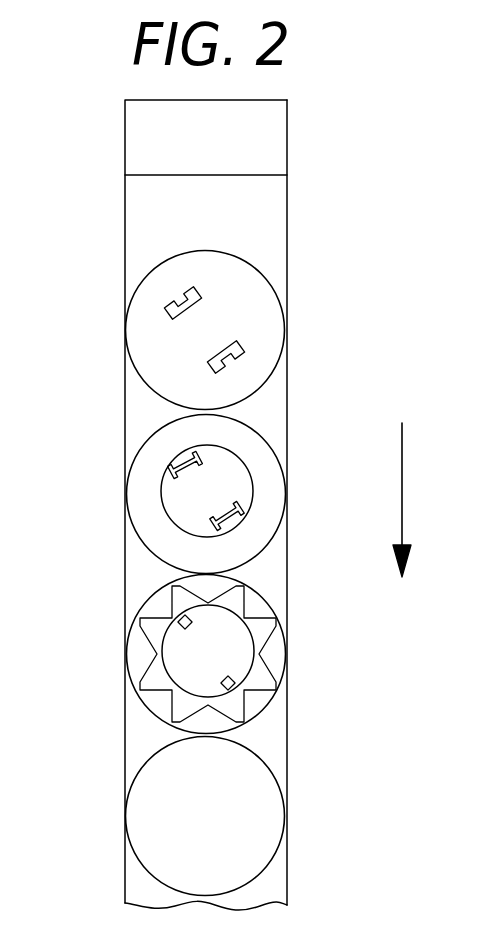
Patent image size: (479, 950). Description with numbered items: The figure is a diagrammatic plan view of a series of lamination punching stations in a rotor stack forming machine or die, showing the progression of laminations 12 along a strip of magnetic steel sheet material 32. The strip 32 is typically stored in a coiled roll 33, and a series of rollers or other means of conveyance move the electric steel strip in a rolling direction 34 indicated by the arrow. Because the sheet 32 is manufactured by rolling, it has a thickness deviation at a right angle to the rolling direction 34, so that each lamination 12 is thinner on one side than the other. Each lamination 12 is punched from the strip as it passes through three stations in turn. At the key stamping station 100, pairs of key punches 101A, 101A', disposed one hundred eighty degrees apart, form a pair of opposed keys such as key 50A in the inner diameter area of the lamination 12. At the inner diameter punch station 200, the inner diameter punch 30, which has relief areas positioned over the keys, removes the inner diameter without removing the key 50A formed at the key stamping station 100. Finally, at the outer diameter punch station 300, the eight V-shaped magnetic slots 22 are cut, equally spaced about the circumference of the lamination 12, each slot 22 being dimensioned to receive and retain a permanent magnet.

The lamination 12 is at (292, 353).
The magnetic slot 22 is at (282, 627).
The inner diameter punch 30 is at (228, 472).
The magnetic steel sheet material 32 is at (272, 242).
The coiled roll 33 is at (277, 132).
The rolling direction 34 is at (402, 486).
The key 50A is at (230, 525).
The key stamping station 100 is at (203, 313).
The key punch 101A is at (200, 267).
The key punch 101A' is at (298, 346).
The inner diameter punch station 200 is at (173, 486).
The outer diameter punch station 300 is at (197, 654).